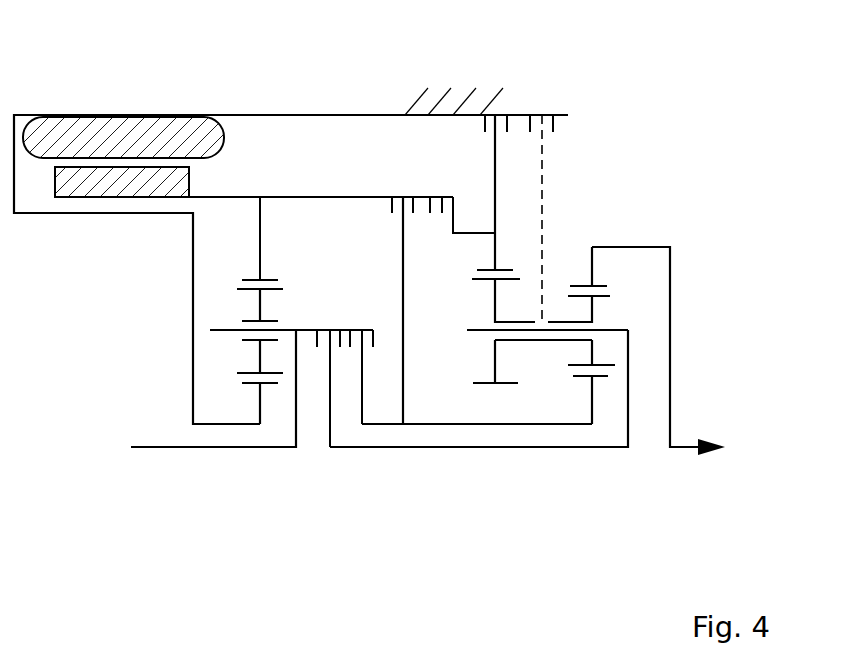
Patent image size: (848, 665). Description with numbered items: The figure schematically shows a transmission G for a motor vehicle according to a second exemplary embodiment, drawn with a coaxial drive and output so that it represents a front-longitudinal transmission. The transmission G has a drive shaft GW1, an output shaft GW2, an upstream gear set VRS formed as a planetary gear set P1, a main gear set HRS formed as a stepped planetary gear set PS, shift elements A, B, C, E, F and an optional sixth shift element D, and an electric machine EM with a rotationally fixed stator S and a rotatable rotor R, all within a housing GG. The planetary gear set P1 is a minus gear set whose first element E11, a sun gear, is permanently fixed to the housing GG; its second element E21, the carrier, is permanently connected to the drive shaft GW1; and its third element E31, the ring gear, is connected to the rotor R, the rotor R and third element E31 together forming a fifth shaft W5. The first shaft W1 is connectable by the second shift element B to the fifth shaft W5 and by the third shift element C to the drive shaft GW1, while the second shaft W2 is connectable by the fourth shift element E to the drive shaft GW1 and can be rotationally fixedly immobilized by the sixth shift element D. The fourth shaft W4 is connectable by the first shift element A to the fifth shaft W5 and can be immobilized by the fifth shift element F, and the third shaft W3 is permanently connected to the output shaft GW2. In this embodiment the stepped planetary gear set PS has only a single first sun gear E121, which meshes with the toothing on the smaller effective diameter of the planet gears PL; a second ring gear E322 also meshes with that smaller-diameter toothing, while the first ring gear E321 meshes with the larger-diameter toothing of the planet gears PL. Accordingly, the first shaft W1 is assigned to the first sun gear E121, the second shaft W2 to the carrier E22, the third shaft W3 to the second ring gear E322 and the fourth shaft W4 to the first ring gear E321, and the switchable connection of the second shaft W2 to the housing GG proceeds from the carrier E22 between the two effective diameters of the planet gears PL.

The electric machine EM is at (88, 70).
The stator S is at (50, 138).
The rotor R is at (83, 178).
The housing GG is at (477, 232).
The transmission G is at (117, 366).
The fifth shaft W5 is at (323, 194).
The second shift element B is at (326, 194).
The first shift element A is at (396, 192).
The fourth shaft W4 is at (437, 192).
The third element E31 is at (249, 276).
The second element E21 is at (218, 337).
The first element E11 is at (269, 387).
The planetary gear set P1 is at (258, 462).
The upstream gear set VRS is at (235, 492).
The fourth shift element E is at (337, 357).
The third shift element C is at (371, 357).
The drive shaft GW1 is at (150, 448).
The first shaft W1 is at (420, 425).
The second shaft W2 is at (465, 448).
The first ring gear E321 is at (507, 264).
The fifth shift element F is at (495, 112).
The sixth shift element D is at (542, 112).
The second ring gear E322 is at (578, 280).
The carrier E22 is at (614, 319).
The third shaft W3 is at (671, 307).
The output shaft GW2 is at (681, 243).
The stepped planetary gear set PS is at (587, 438).
The main gear set HRS is at (595, 489).
The planet gears PL is at (596, 354).
The first sun gear E121 is at (604, 384).